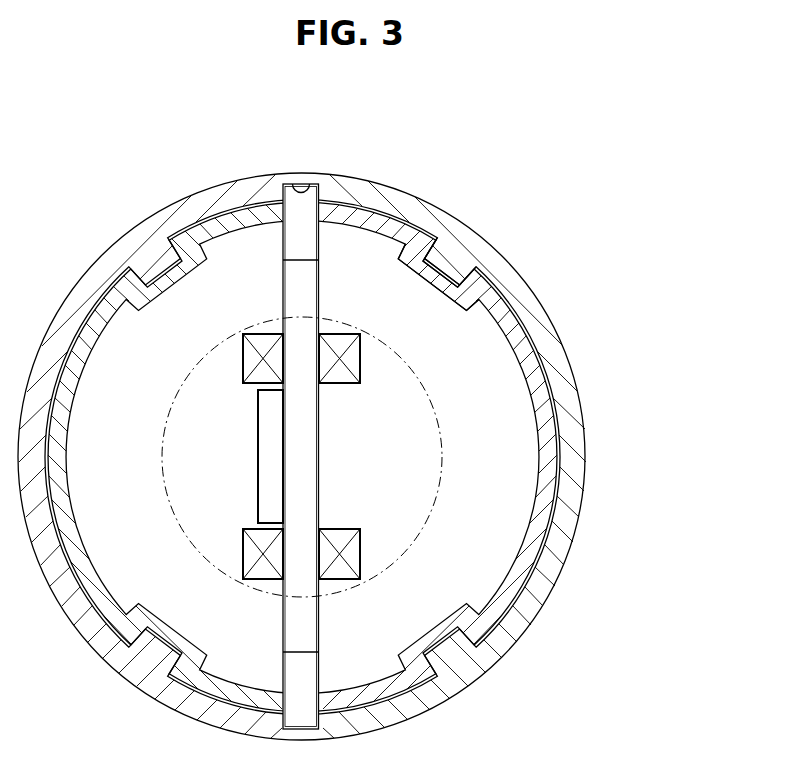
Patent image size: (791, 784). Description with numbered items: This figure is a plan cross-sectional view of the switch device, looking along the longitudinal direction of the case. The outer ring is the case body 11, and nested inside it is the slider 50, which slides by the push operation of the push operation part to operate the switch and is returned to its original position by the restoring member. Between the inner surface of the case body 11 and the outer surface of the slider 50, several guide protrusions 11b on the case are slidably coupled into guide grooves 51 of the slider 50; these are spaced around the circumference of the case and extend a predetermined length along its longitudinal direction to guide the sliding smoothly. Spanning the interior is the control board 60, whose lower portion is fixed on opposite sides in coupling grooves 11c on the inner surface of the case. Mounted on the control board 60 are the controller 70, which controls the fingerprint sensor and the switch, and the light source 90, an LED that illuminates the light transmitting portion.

The case body 11 is at (597, 463).
The guide protrusion 11b is at (438, 268).
The coupling groove 11c is at (311, 190).
The slider 50 is at (542, 342).
The guide groove 51 is at (438, 268).
The control board 60 is at (318, 490).
The controller 70 is at (267, 461).
The light source 90 is at (350, 362).